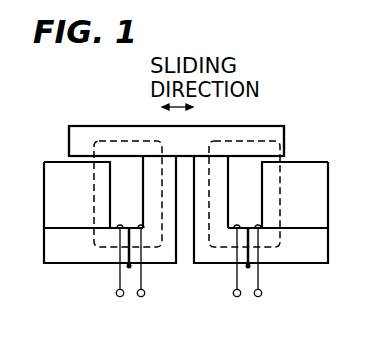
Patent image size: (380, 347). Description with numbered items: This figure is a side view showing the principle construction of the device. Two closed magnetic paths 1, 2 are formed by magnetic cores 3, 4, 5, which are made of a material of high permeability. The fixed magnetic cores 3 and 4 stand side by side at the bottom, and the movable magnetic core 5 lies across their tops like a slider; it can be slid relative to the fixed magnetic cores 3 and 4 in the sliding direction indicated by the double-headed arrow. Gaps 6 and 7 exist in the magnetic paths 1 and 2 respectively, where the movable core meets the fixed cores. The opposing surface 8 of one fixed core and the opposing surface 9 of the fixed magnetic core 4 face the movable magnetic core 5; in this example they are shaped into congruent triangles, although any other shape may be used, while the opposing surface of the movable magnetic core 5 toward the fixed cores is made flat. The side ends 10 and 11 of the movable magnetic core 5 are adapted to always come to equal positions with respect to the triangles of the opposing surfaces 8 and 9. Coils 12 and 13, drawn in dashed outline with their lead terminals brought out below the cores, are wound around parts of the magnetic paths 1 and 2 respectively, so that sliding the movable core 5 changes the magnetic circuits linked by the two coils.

The closed magnetic path 1 is at (92, 187).
The closed magnetic path 2 is at (280, 200).
The fixed magnetic core 3 is at (62, 256).
The fixed magnetic core 4 is at (305, 258).
The movable magnetic core 5 is at (83, 131).
The gap 6 is at (83, 157).
The gap 7 is at (273, 160).
The opposing surface 8 is at (53, 162).
The opposing surface 9 is at (328, 162).
The side end 10 is at (68, 126).
The side end 11 is at (287, 138).
The coil 12 is at (118, 272).
The coil 13 is at (235, 270).